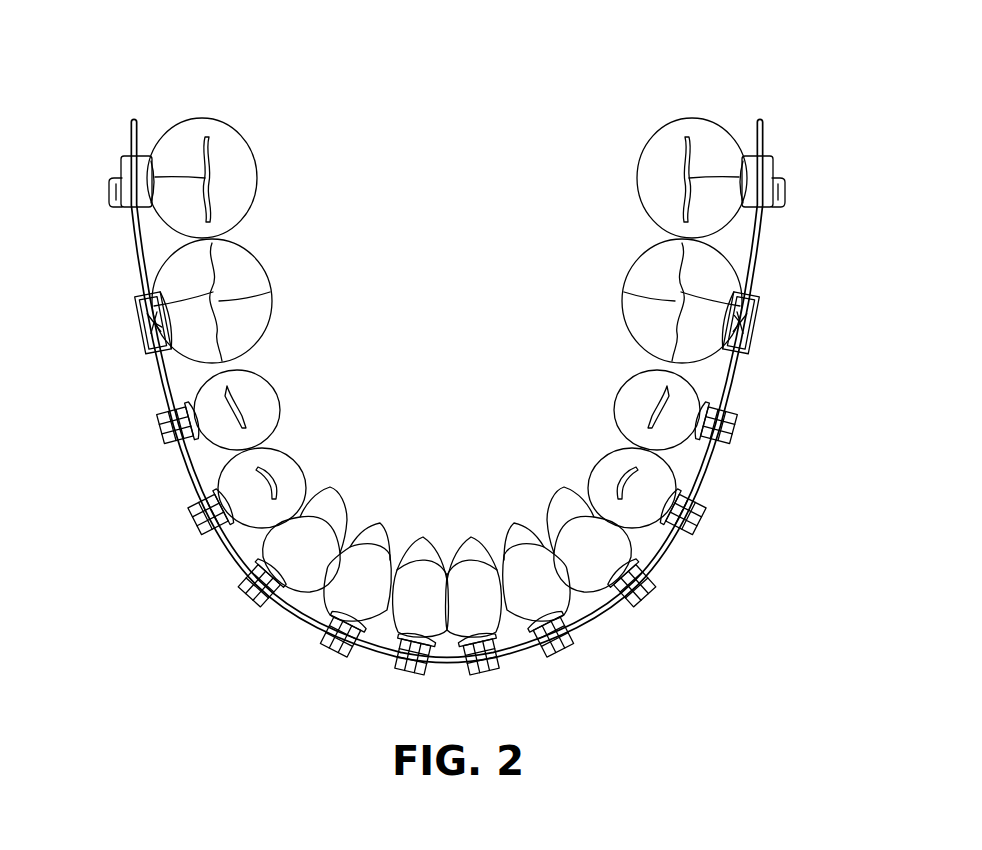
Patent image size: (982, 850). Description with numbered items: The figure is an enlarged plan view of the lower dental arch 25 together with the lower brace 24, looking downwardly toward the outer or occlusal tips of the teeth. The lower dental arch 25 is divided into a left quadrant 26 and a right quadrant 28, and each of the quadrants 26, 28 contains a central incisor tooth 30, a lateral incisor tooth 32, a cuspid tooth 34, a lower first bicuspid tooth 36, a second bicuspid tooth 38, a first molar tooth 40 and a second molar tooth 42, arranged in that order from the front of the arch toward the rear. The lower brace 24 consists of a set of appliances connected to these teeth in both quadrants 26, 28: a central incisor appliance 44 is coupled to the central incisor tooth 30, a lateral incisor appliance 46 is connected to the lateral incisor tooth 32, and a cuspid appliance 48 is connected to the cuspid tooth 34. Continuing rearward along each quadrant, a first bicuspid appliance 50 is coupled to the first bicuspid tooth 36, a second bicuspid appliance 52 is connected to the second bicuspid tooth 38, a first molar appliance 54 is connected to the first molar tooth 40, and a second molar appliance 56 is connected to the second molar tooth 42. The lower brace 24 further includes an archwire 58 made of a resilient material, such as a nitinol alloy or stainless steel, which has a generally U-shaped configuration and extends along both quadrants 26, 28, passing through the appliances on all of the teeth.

The lower brace 24 is at (830, 231).
The lower dental arch 25 is at (690, 70).
The left quadrant 26 is at (795, 392).
The right quadrant 28 is at (100, 395).
The central incisor tooth 30 is at (463, 548).
The lateral incisor tooth 32 is at (385, 540).
The cuspid tooth 34 is at (337, 503).
The lower first bicuspid tooth 36 is at (290, 472).
The second bicuspid tooth 38 is at (268, 388).
The first molar tooth 40 is at (248, 278).
The second molar tooth 42 is at (242, 168).
The central incisor appliance 44 is at (410, 664).
The lateral incisor appliance 46 is at (335, 640).
The cuspid appliance 48 is at (258, 592).
The first bicuspid appliance 50 is at (195, 525).
The second bicuspid appliance 52 is at (160, 417).
The first molar appliance 54 is at (134, 305).
The second molar appliance 56 is at (122, 176).
The archwire 58 is at (183, 473).